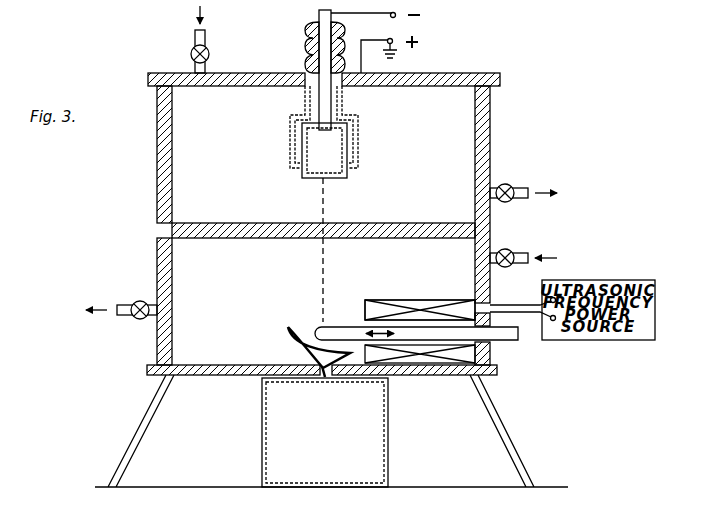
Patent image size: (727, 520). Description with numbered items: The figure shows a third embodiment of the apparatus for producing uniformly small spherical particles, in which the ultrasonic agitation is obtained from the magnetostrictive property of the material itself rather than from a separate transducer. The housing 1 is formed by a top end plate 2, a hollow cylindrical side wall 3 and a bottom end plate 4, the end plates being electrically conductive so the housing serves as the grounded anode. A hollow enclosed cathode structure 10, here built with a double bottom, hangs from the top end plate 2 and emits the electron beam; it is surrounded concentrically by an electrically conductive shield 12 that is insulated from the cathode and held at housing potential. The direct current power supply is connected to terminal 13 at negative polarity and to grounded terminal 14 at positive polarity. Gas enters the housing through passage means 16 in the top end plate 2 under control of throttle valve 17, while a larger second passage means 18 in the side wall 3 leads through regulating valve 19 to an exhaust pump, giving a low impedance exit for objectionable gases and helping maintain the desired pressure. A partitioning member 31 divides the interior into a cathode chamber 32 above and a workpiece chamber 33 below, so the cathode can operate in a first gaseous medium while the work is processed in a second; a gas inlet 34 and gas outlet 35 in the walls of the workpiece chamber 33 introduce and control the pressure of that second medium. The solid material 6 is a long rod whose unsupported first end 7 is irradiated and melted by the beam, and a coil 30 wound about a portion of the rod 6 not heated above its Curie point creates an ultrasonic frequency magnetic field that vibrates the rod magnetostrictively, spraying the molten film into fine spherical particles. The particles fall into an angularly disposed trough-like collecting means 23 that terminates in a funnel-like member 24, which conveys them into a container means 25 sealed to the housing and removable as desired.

The housing 1 is at (322, 216).
The top end plate 2 is at (480, 73).
The side wall 3 is at (490, 108).
The bottom end plate 4 is at (497, 371).
The solid material 6 is at (417, 322).
The first end 7 is at (330, 326).
The cathode structure 10 is at (300, 178).
The shield 12 is at (358, 140).
The terminal 13 is at (391, 12).
The terminal 14 is at (396, 43).
The passage means 16 is at (206, 68).
The throttle valve 17 is at (191, 53).
The second passage means 18 is at (482, 190).
The regulating valve 19 is at (509, 185).
The collecting means 23 is at (287, 328).
The funnel-like member 24 is at (326, 378).
The container means 25 is at (388, 433).
The coil 30 is at (373, 300).
The partitioning member 31 is at (205, 222).
The cathode chamber 32 is at (182, 162).
The workpiece chamber 33 is at (176, 274).
The gas inlet 34 is at (482, 258).
The gas outlet 35 is at (164, 311).